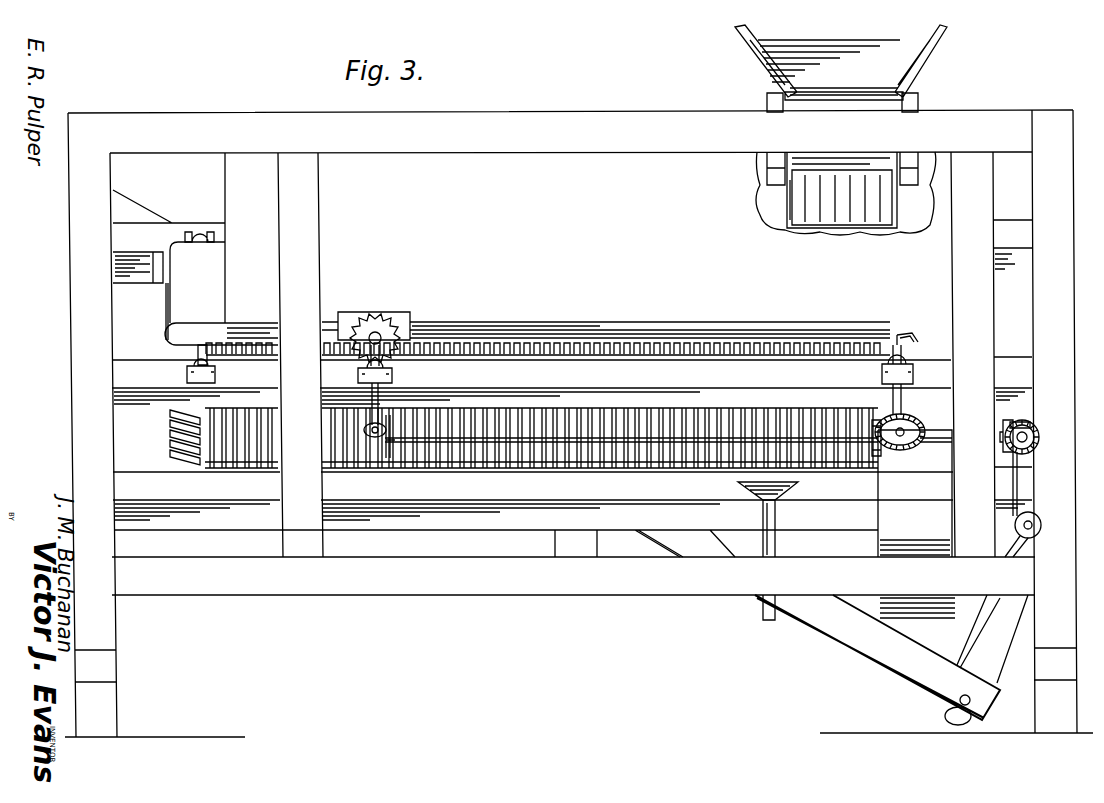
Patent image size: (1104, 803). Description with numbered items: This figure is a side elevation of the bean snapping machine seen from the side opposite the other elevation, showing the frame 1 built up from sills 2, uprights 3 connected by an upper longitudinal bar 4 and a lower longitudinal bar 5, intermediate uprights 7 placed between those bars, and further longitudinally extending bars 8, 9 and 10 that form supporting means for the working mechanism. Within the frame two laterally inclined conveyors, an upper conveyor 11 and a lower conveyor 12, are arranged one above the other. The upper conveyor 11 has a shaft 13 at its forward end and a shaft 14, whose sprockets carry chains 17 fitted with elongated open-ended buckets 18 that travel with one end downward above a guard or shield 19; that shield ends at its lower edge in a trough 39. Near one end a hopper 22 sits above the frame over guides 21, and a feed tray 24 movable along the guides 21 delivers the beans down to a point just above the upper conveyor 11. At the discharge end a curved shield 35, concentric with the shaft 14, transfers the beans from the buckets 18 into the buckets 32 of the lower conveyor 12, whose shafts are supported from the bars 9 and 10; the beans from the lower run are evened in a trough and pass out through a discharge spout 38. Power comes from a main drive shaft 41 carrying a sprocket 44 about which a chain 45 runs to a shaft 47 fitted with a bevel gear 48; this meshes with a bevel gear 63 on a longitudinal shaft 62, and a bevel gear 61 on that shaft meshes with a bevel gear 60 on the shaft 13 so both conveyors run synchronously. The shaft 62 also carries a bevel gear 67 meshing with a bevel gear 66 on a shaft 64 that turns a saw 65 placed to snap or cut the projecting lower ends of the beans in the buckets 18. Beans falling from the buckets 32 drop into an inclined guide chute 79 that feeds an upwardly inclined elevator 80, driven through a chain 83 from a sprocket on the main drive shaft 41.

The frame 1 is at (570, 116).
The sills 2 is at (1054, 722).
The uprights 3 is at (103, 627).
The upper longitudinal bar 4 is at (510, 113).
The lower longitudinal bar 5 is at (565, 590).
The uprights 7 is at (310, 212).
The longitudinally extending bar 8 is at (155, 235).
The longitudinally extending bar 9 is at (127, 376).
The longitudinally extending bar 10 is at (135, 487).
The upper conveyor 11 is at (710, 341).
The lower conveyor 12 is at (511, 456).
The shaft 13 is at (898, 335).
The shaft 14 is at (200, 350).
The chains 17 is at (531, 341).
The buckets or pockets 18 is at (634, 341).
The guard or shield 19 is at (623, 232).
The guides 21 is at (920, 100).
The hopper 22 is at (932, 51).
The feed tray 24 is at (888, 222).
The buckets or pockets 32 is at (463, 470).
The curved shield or guard 35 is at (212, 261).
The discharge chute or spout 38 is at (769, 620).
The trough 39 is at (774, 322).
The main drive shaft 41 is at (1030, 531).
The sprocket 44 is at (1030, 521).
The chain 45 is at (1019, 485).
The shaft 47 is at (1030, 441).
The bevel gear 48 is at (1025, 419).
The bevel gear 60 is at (920, 424).
The bevel gear 61 is at (879, 456).
The shaft 62 is at (937, 443).
The bevel gear 63 is at (1008, 420).
The shaft 64 is at (386, 392).
The saw 65 is at (378, 312).
The bevel gear 66 is at (366, 427).
The bevel gear 67 is at (387, 460).
The guide chute 79 is at (935, 508).
The elevator 80 is at (853, 642).
The chain 83 is at (985, 625).